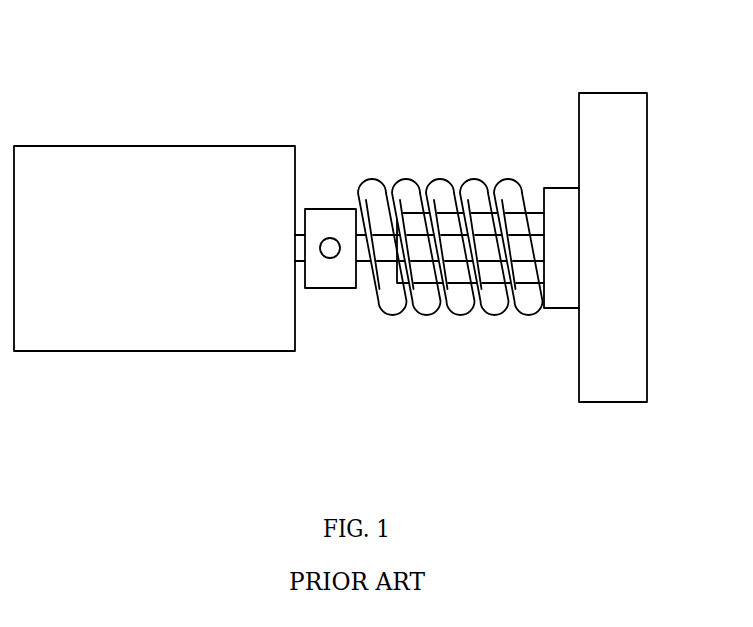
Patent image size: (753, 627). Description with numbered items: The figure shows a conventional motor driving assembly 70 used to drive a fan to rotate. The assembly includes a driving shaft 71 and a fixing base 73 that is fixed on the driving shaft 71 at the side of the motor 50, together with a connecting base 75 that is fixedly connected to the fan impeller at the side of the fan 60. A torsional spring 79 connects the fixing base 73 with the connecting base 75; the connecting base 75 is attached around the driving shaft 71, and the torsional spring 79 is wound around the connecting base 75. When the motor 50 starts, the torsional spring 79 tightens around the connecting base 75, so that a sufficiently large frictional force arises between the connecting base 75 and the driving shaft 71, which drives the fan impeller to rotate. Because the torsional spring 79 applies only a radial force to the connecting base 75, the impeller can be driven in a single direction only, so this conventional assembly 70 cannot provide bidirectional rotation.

The motor 50 is at (167, 313).
The fan 60 is at (632, 254).
The damping assembly 70 is at (412, 168).
The driving shaft 71 is at (366, 195).
The fixing base 73 is at (330, 222).
The connecting base 75 is at (547, 225).
The torsional spring 79 is at (413, 205).